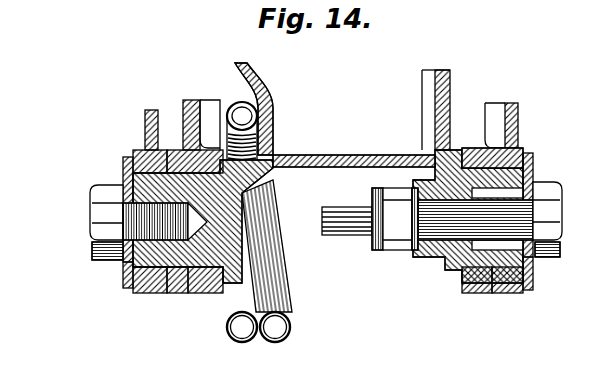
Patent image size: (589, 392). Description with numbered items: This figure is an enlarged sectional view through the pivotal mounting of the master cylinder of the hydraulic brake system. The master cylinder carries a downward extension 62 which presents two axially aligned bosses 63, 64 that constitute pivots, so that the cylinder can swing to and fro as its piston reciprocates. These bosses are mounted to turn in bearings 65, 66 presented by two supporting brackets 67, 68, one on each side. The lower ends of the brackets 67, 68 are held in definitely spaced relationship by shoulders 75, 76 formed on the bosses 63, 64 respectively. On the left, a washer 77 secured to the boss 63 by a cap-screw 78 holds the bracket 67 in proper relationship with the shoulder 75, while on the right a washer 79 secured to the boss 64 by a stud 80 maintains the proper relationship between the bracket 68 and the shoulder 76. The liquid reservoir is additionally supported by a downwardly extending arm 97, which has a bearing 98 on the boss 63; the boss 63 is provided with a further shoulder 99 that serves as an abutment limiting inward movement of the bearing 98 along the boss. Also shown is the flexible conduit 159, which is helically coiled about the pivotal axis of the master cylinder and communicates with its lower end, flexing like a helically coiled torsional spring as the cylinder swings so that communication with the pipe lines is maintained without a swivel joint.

The downward extension 62 is at (252, 76).
The supporting bracket 67 is at (185, 112).
The downwardly extending arm 97 is at (147, 120).
The washer 77 is at (125, 167).
The cap-screw 78 is at (100, 210).
The shoulder 99 is at (125, 268).
The bearing 98 is at (145, 293).
The boss 63 is at (189, 293).
The bearing 65 is at (208, 293).
The shoulder 75 is at (254, 282).
The flexible conduit 159 is at (292, 318).
The supporting bracket 68 is at (518, 113).
The washer 79 is at (533, 162).
The stud 80 is at (433, 240).
The shoulder 76 is at (455, 283).
The boss 64 is at (495, 290).
The bearing 66 is at (518, 291).